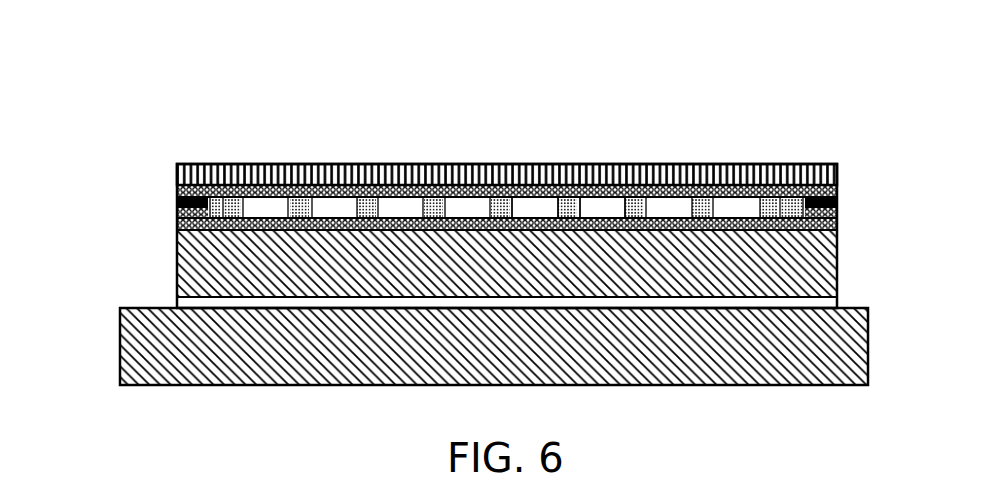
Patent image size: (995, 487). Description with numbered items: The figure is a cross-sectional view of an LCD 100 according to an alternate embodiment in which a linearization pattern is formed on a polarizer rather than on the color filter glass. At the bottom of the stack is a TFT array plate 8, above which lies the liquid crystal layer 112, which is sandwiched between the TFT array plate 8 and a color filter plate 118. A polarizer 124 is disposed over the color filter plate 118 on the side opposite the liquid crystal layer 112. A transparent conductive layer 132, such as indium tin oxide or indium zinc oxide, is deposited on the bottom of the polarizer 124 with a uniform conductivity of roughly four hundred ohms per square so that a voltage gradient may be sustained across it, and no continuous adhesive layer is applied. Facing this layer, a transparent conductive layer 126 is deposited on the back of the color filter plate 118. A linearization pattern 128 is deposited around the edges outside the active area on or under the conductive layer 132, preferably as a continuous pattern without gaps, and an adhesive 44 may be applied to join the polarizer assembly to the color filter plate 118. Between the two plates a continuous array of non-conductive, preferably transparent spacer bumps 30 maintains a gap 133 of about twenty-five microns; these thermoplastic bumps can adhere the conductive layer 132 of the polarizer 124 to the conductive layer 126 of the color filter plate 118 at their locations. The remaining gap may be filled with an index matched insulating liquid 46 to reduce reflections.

The LCD 100 is at (100, 73).
The polarizer 124 is at (178, 165).
The transparent conductive layer 132 is at (838, 191).
The linearization pattern 128 is at (177, 202).
The adhesive 44 is at (177, 213).
The spacer bumps 30 is at (497, 200).
The gap 133 is at (537, 207).
The index matched insulating liquid 46 is at (602, 207).
The transparent conductive layer 126 is at (838, 224).
The color filter plate 118 is at (177, 260).
The liquid crystal layer 112 is at (185, 302).
The TFT array plate 8 is at (120, 338).